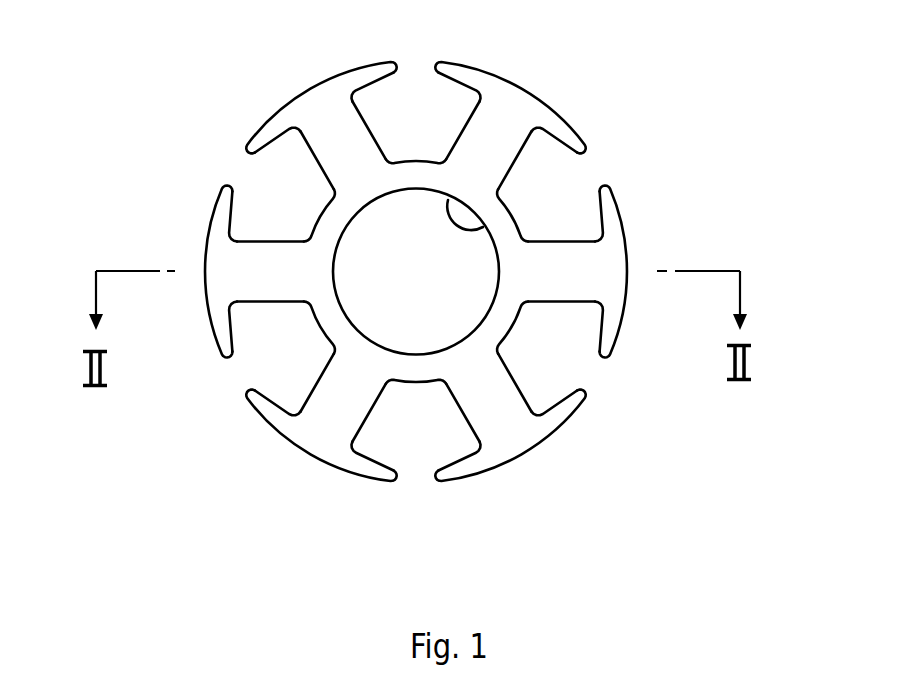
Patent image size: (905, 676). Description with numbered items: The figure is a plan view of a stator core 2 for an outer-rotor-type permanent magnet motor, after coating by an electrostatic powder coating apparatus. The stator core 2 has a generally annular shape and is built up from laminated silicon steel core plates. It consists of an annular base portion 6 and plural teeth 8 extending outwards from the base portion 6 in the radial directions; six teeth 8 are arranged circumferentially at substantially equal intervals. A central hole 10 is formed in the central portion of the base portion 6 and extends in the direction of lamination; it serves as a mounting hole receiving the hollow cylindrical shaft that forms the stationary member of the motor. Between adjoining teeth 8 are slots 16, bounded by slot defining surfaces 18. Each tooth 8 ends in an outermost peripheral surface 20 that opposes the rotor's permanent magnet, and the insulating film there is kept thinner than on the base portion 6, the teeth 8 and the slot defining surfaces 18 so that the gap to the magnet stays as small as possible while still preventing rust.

The stator core 2 is at (430, 317).
The annular base portion 6 is at (415, 383).
The teeth 8 is at (376, 357).
The central hole 10 is at (483, 227).
The slots 16 is at (273, 303).
The slot defining surfaces 18 is at (298, 412).
The outermost peripheral surface 20 is at (306, 455).